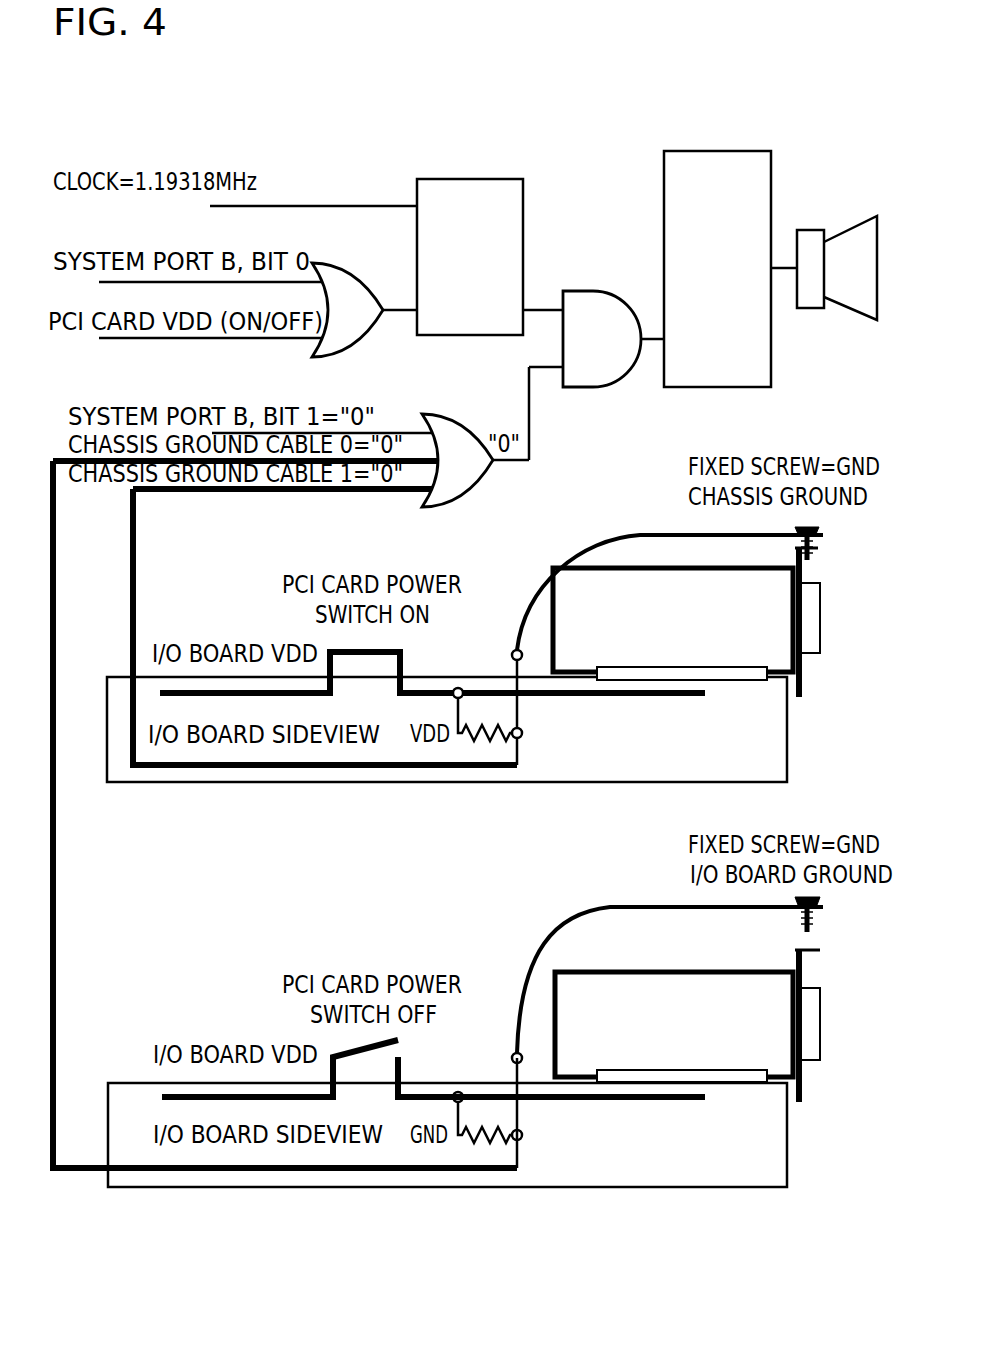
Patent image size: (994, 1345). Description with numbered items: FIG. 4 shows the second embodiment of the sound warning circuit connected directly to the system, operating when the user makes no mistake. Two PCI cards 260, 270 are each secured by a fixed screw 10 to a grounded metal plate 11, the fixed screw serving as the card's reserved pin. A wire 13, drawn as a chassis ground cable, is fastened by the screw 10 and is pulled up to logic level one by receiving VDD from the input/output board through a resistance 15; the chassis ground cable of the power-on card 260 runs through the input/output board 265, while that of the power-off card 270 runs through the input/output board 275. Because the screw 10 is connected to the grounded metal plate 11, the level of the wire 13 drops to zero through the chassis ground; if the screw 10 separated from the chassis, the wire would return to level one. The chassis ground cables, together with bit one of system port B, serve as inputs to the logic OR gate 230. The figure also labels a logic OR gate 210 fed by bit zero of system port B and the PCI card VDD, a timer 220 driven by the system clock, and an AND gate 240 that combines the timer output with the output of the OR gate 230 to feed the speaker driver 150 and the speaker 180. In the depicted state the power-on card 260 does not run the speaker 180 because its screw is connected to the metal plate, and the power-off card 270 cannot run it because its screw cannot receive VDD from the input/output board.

The fixed screw 10 is at (811, 560).
The grounded metal plate 11 is at (820, 645).
The wire 13 is at (672, 537).
The resistor 15 is at (483, 740).
The speaker driver 150 is at (718, 151).
The speaker 180 is at (812, 230).
The OR gate 210 is at (352, 262).
The timer 220 is at (482, 179).
The logic OR gate 230 is at (458, 414).
The AND gate 240 is at (588, 291).
The PCI card 260 is at (632, 567).
The input/output board 265 is at (610, 782).
The PCI card 270 is at (652, 972).
The input/output board 275 is at (610, 1187).